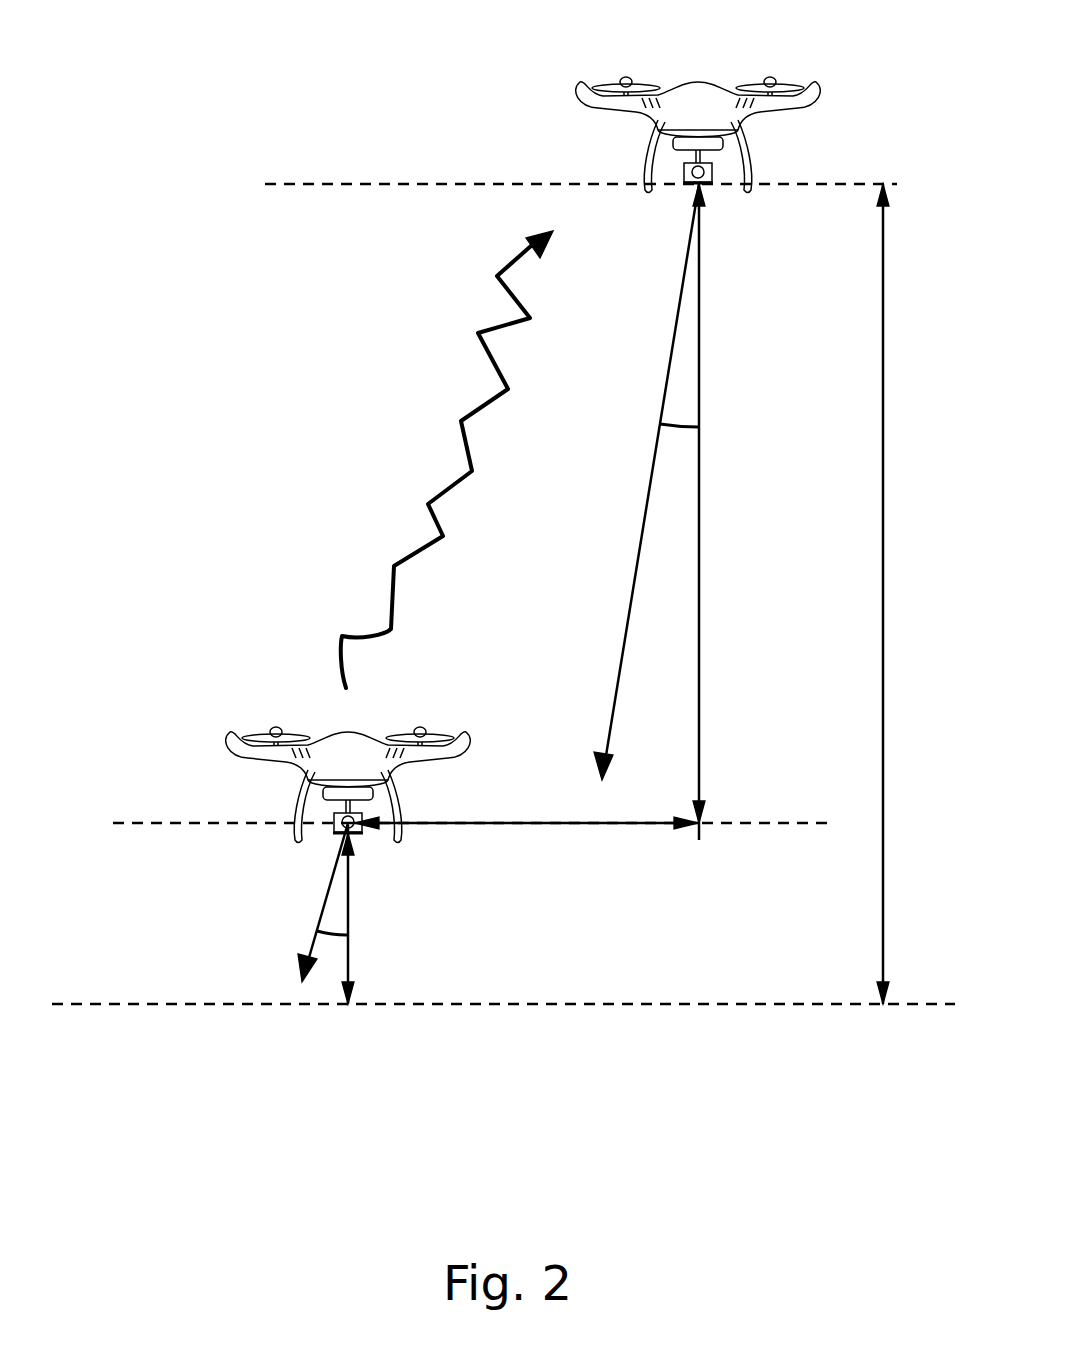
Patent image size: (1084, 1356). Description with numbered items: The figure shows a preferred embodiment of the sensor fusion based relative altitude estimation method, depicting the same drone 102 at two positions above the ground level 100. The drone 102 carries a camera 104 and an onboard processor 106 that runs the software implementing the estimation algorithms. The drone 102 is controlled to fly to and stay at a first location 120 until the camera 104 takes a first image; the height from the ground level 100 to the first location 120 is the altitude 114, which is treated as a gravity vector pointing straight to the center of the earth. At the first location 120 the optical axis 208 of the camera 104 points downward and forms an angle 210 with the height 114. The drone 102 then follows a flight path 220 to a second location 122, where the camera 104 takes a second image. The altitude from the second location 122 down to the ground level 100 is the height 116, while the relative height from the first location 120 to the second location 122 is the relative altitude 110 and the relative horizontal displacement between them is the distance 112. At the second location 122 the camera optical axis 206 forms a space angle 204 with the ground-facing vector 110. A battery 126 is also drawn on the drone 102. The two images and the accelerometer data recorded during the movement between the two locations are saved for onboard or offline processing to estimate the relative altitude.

The ground level 100 is at (142, 1002).
The drone 102 is at (697, 90).
The camera 104 is at (680, 176).
The onboard processor 106 is at (300, 832).
The relative height 110 is at (704, 540).
The relative horizontal displacement 112 is at (475, 828).
The height 114 is at (350, 897).
The height 116 is at (878, 865).
The first location 120 is at (192, 728).
The second location 122 is at (550, 80).
The battery pack 126 is at (672, 140).
The space angle 204 is at (685, 388).
The optical axis 206 is at (628, 605).
The optical axis 208 is at (323, 885).
The space angle 210 is at (337, 920).
The flight path 220 is at (434, 520).